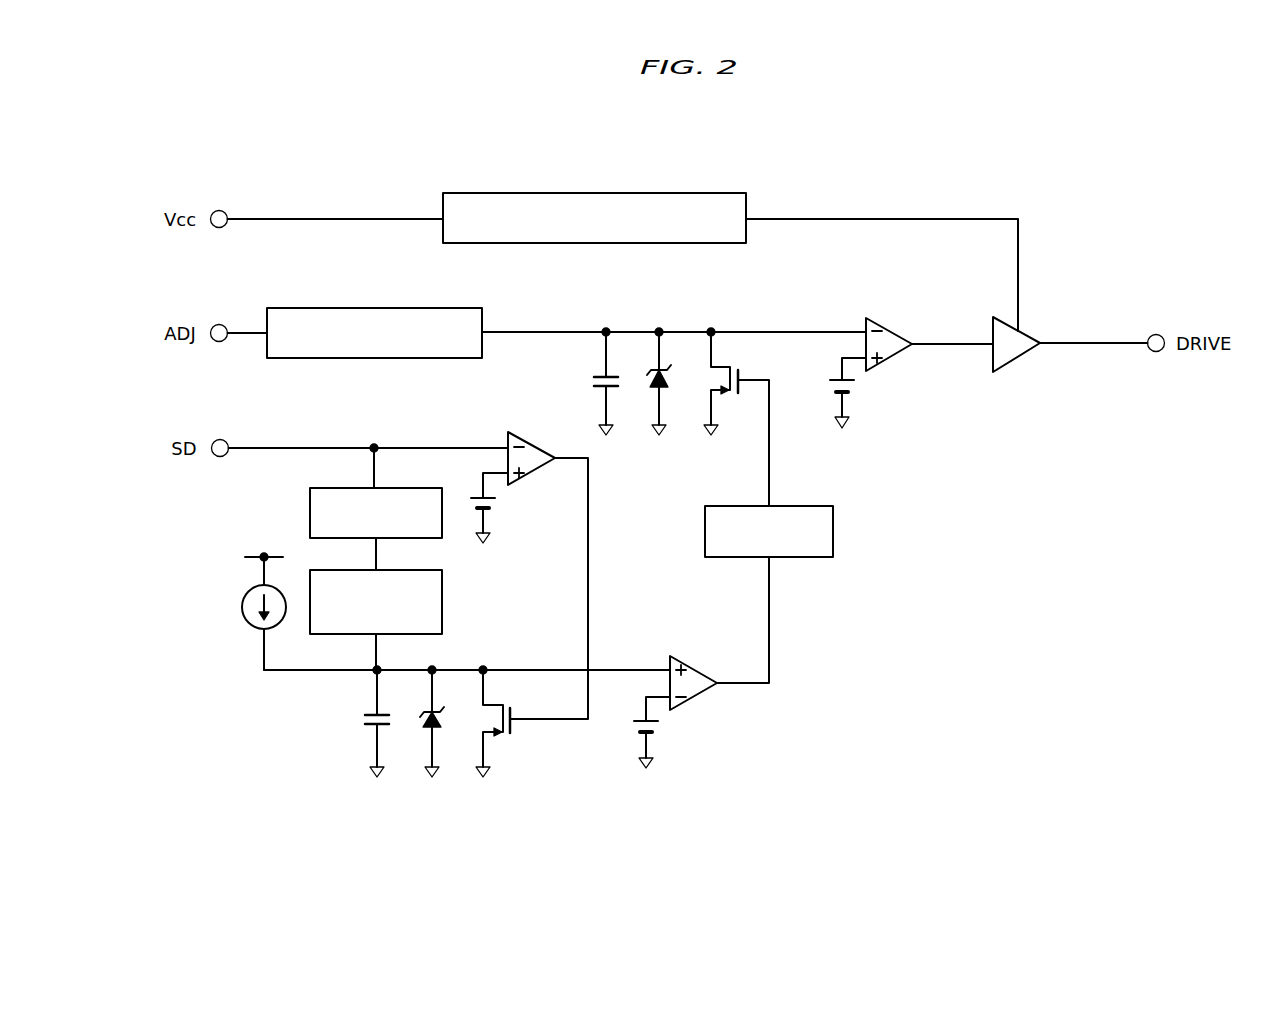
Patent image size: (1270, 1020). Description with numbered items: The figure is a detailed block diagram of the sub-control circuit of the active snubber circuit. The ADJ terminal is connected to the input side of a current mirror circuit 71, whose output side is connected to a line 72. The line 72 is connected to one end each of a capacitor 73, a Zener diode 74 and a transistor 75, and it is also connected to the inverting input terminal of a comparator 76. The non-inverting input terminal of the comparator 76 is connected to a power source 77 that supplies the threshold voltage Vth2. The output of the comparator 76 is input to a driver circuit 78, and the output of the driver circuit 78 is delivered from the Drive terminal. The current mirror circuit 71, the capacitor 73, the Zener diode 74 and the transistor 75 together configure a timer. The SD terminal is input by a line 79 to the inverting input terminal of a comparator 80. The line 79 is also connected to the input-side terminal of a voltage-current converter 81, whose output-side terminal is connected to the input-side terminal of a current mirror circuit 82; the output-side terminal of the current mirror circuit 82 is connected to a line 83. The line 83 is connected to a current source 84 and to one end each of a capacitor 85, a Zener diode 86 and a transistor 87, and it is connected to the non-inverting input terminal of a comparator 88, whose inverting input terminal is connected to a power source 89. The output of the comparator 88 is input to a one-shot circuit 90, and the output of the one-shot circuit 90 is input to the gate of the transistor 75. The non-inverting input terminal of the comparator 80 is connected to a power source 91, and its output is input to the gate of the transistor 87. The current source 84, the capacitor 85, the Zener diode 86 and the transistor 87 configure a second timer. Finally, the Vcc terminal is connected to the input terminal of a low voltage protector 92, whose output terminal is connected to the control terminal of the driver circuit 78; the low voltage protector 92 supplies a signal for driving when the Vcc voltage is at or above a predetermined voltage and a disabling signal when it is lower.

The current mirror circuit 71 is at (380, 308).
The line 72 is at (512, 331).
The capacitor 73 is at (595, 377).
The Zener diode 74 is at (657, 392).
The transistor 75 is at (706, 385).
The comparator 76 is at (897, 318).
The power source 77 is at (848, 400).
The driver circuit 78 is at (1022, 358).
The line 79 is at (283, 447).
The comparator 80 is at (529, 438).
The voltage-current converter 81 is at (415, 488).
The current mirror circuit 82 is at (445, 594).
The line 83 is at (305, 672).
The current source 84 is at (242, 607).
The capacitor 85 is at (381, 731).
The Zener diode 86 is at (436, 729).
The transistor 87 is at (514, 735).
The comparator 88 is at (700, 694).
The power source 89 is at (650, 735).
The one-shot circuit 90 is at (838, 530).
The power source 91 is at (490, 508).
The low voltage protector 92 is at (598, 193).